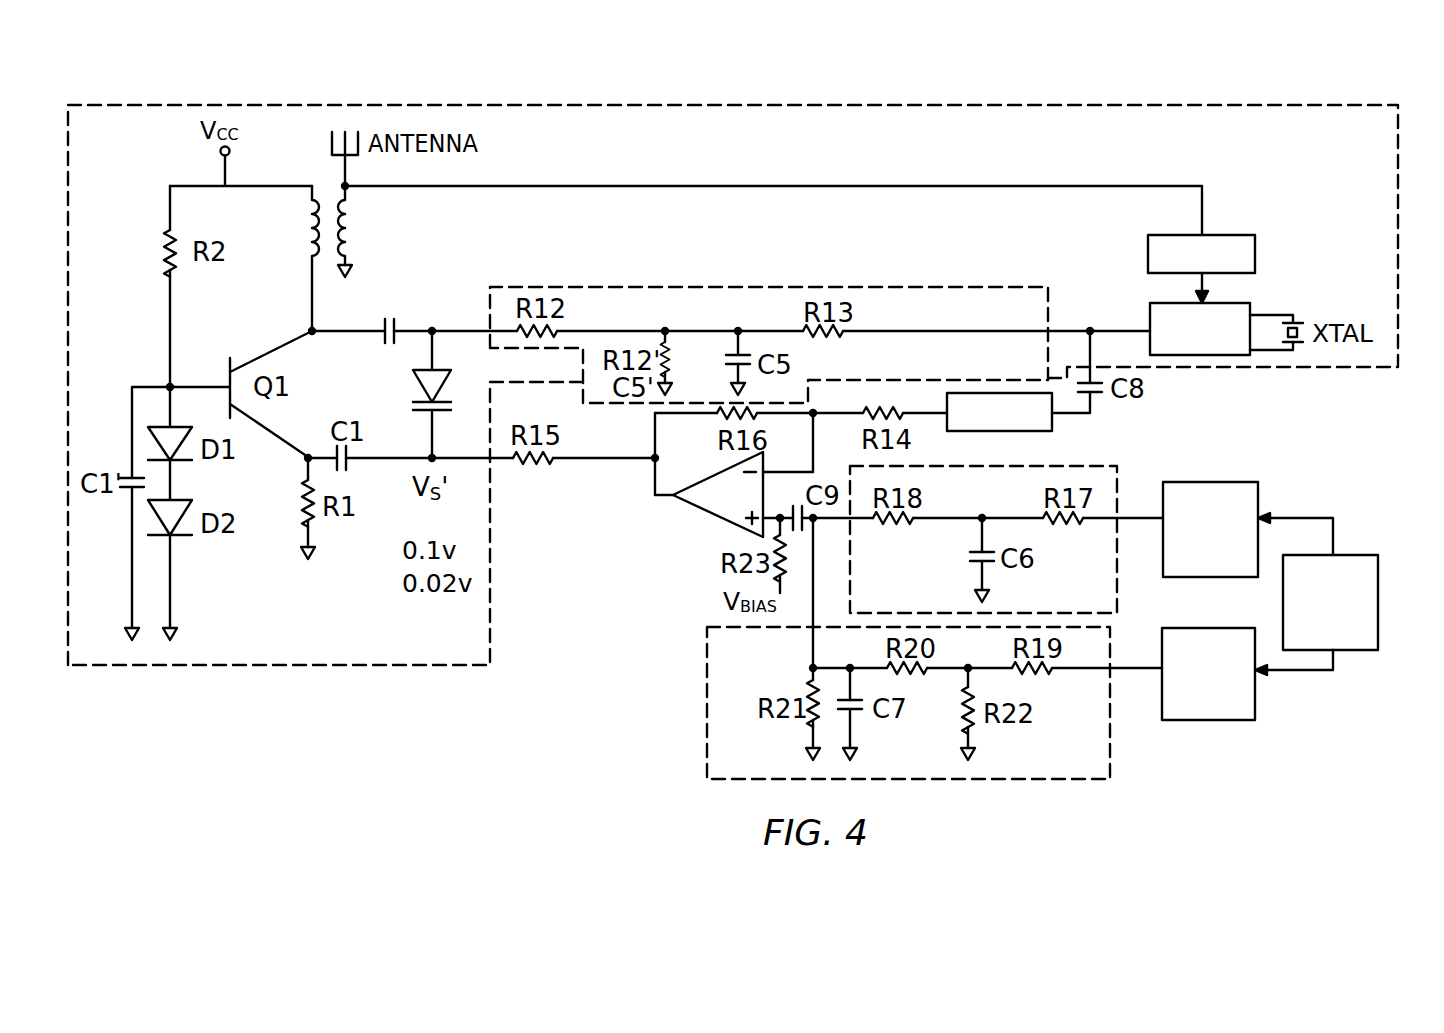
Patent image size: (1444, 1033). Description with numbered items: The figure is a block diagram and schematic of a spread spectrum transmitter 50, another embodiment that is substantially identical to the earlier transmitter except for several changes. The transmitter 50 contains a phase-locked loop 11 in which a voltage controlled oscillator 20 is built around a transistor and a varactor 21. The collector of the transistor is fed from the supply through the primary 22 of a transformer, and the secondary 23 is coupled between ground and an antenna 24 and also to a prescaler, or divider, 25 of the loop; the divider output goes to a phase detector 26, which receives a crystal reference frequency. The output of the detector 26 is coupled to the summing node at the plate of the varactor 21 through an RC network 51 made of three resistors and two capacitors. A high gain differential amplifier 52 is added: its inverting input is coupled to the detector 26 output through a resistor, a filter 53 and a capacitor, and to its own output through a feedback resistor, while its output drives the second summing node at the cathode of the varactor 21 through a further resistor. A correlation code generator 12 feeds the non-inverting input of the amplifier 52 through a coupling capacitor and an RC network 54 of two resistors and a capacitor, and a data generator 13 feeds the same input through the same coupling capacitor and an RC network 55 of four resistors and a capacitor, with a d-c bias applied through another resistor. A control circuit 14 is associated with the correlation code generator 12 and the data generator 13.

The phase-locked loop 11 is at (960, 105).
The correlation code generator 12 is at (1215, 578).
The data generator 13 is at (1195, 720).
The control circuit 14 is at (1360, 555).
The voltage controlled oscillator 20 is at (375, 278).
The varactor 21 is at (415, 378).
The primary 22 is at (306, 235).
The secondary 23 is at (347, 233).
The antenna 24 is at (329, 143).
The prescaler 25 is at (1148, 250).
The phase detector 26 is at (1150, 315).
The spread spectrum transmitter 50 is at (387, 735).
The RC network 51 is at (917, 285).
The high gain differential amplifier 52 is at (703, 512).
The filter 53 is at (1020, 433).
The RC network 54 is at (1083, 463).
The RC network 55 is at (1022, 782).